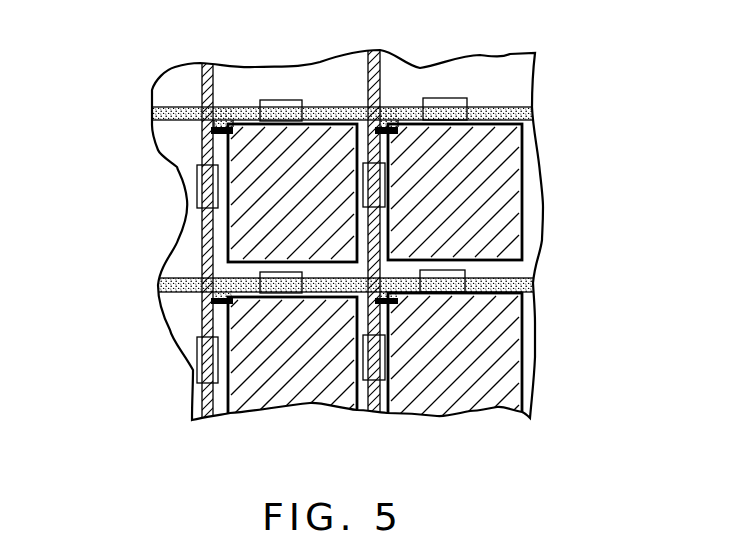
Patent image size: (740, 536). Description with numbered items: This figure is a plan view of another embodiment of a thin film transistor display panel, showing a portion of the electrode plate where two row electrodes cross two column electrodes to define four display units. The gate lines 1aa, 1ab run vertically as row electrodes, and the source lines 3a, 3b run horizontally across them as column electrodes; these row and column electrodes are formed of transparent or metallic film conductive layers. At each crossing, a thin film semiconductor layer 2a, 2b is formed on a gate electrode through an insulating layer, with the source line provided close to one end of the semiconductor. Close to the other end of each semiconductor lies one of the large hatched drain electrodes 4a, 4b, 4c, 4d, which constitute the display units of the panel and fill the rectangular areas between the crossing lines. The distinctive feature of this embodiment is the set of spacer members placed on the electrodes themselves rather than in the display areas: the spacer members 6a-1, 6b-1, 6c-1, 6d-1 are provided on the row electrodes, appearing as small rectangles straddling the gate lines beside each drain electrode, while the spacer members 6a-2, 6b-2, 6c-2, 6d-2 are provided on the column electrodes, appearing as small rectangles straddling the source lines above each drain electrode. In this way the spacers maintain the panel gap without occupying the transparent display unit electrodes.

The gate line 1aa is at (208, 63).
The gate line 1ab is at (372, 50).
The thin film semiconductor layer 2a is at (226, 107).
The thin film semiconductor layer 2b is at (387, 107).
The source line 3a is at (533, 113).
The source line 3b is at (533, 280).
The drain electrode 4a is at (323, 127).
The drain electrode 4b is at (500, 147).
The drain electrode 4c is at (330, 387).
The drain electrode 4d is at (488, 382).
The spacer member 6a-1 is at (197, 188).
The spacer member 6a-2 is at (279, 100).
The spacer member 6b-1 is at (388, 173).
The spacer member 6b-2 is at (445, 100).
The spacer member 6c-1 is at (197, 365).
The spacer member 6c-2 is at (278, 295).
The spacer member 6d-1 is at (383, 368).
The spacer member 6d-2 is at (455, 295).